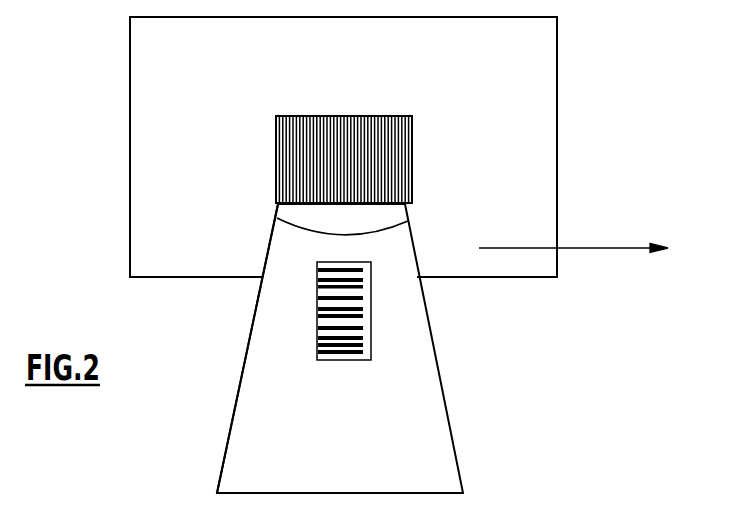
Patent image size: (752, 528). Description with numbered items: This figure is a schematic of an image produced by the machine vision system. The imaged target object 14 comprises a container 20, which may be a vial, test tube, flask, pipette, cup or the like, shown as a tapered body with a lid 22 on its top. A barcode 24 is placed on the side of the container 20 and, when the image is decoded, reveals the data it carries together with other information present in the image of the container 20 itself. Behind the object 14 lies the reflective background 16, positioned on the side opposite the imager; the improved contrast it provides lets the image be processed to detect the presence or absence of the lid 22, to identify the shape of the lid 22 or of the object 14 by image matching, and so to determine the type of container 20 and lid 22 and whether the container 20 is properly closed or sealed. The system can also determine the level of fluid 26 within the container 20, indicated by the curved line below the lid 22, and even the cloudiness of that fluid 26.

The target object 14 is at (358, 437).
The reflective background 16 is at (518, 71).
The container 20 is at (230, 422).
The lid 22 is at (276, 161).
The barcode 24 is at (317, 360).
The fluid 26 is at (298, 228).